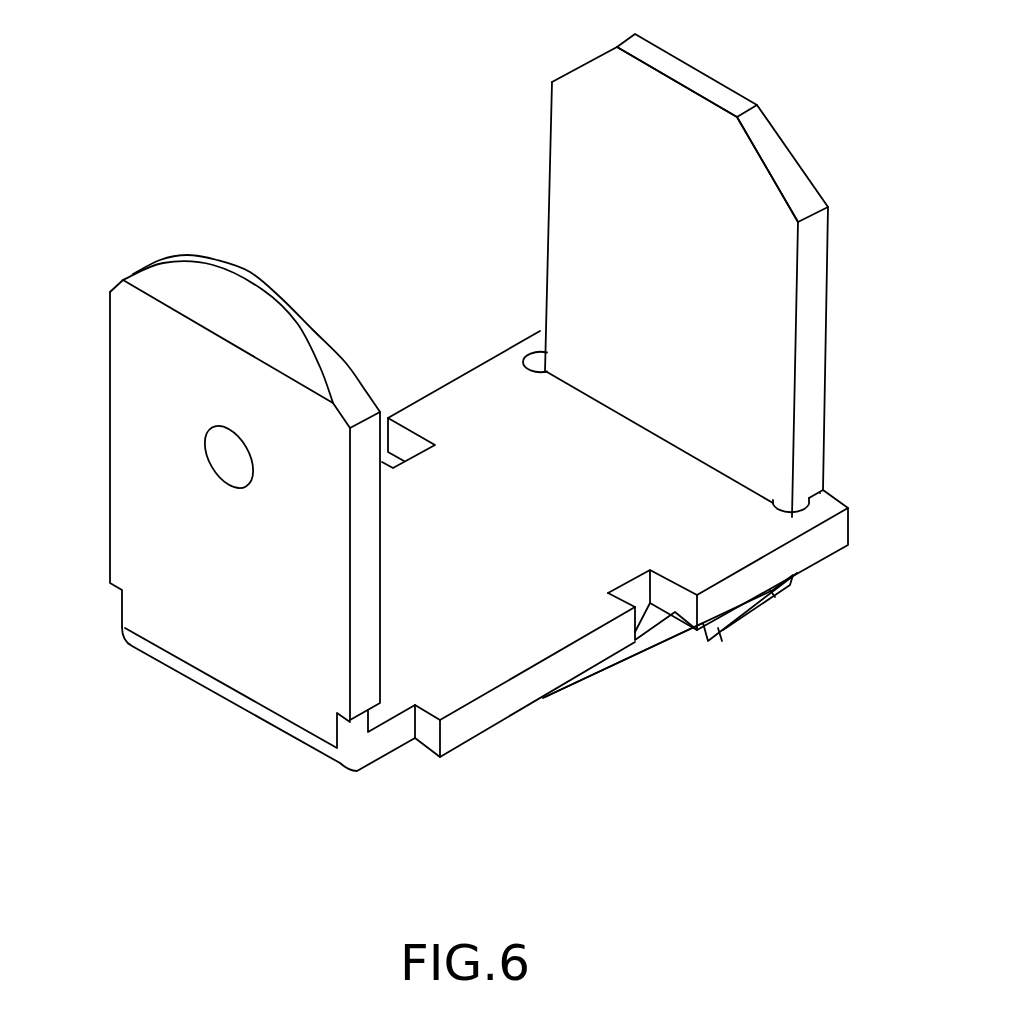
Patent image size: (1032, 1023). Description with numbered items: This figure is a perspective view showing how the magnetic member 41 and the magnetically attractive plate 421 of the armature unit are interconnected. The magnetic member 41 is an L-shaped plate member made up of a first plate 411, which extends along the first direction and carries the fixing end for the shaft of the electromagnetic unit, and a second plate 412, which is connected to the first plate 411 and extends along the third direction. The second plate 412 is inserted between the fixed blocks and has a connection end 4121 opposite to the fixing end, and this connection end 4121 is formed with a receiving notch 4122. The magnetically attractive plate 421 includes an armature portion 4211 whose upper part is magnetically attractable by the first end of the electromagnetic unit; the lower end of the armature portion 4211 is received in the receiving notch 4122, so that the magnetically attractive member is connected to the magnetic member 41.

The magnetic member 41 is at (108, 390).
The first plate 411 is at (203, 647).
The second plate 412 is at (460, 680).
The connection end 4121 is at (600, 402).
The receiving notch 4122 is at (791, 505).
The magnetically attractive plate 421 is at (812, 354).
The armature portion 4211 is at (573, 145).